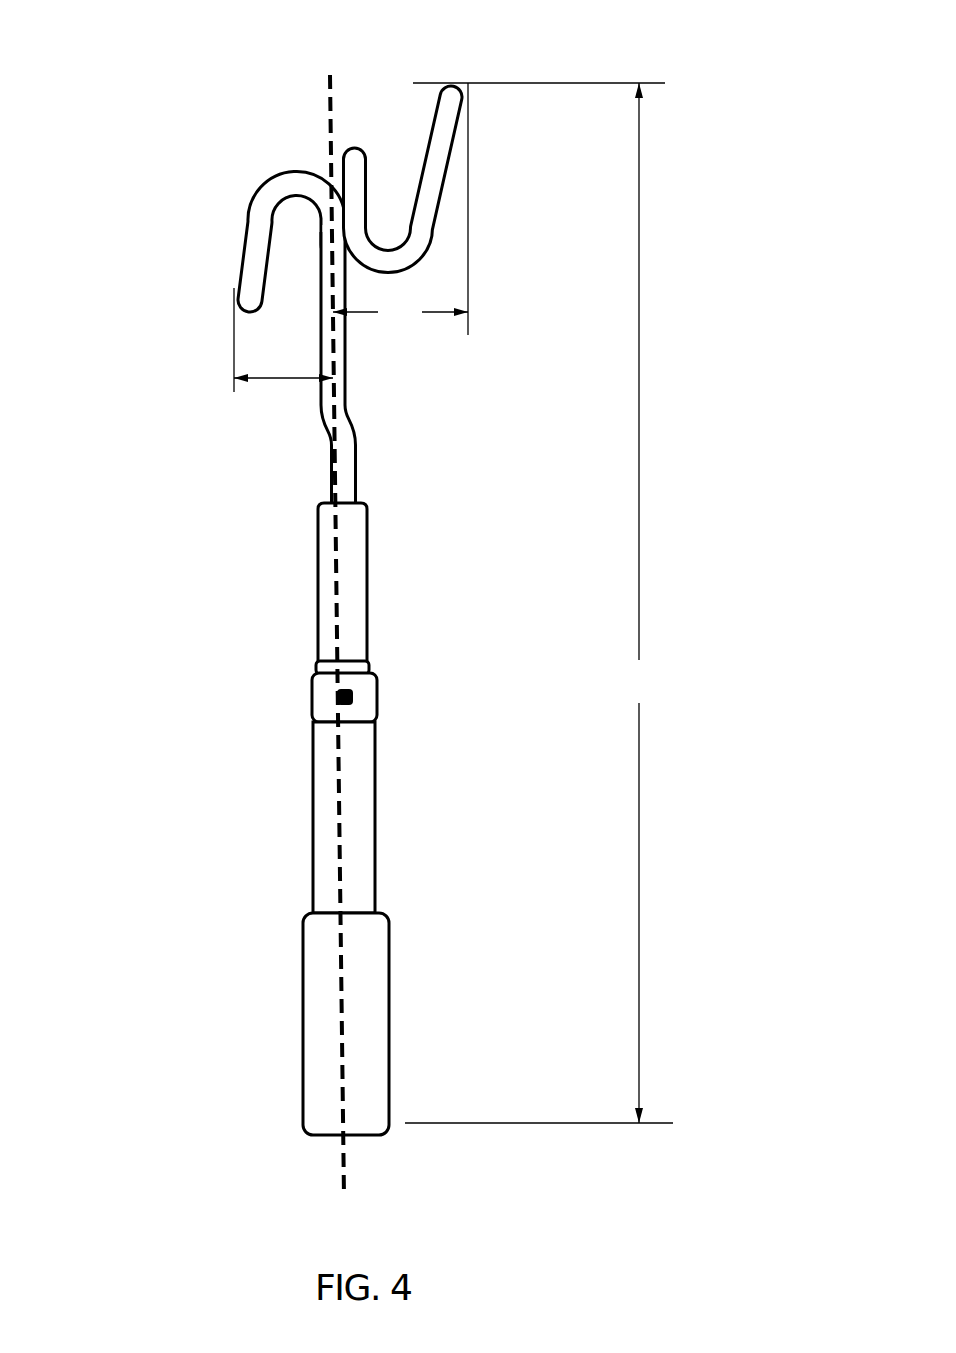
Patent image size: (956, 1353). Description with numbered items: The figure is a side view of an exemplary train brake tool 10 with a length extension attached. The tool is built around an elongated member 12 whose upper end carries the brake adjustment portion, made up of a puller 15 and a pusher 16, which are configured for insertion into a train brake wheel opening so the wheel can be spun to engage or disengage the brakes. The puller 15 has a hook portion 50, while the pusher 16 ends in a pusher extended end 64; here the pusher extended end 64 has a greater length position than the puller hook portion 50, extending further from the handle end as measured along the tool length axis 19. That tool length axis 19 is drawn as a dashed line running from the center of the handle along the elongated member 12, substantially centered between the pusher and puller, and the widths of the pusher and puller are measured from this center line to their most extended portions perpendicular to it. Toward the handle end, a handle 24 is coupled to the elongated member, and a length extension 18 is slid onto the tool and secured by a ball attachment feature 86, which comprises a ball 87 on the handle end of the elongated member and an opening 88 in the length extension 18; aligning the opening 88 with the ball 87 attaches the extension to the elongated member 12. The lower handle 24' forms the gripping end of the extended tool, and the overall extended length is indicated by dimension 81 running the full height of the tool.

The train brake tool 10 is at (158, 157).
The elongated member 12 is at (332, 478).
The puller 15 is at (245, 263).
The pusher 16 is at (445, 123).
The length extension 18 is at (353, 802).
The tool length axis 19 is at (331, 82).
The handle 24 is at (271, 582).
The handle 24' is at (278, 1024).
The hook portion 50 is at (282, 188).
The pusher extended end 64 is at (453, 83).
The overall length 81 is at (539, 603).
The ball attachment feature 86 is at (310, 723).
The ball 87 is at (317, 703).
The opening 88 is at (347, 700).